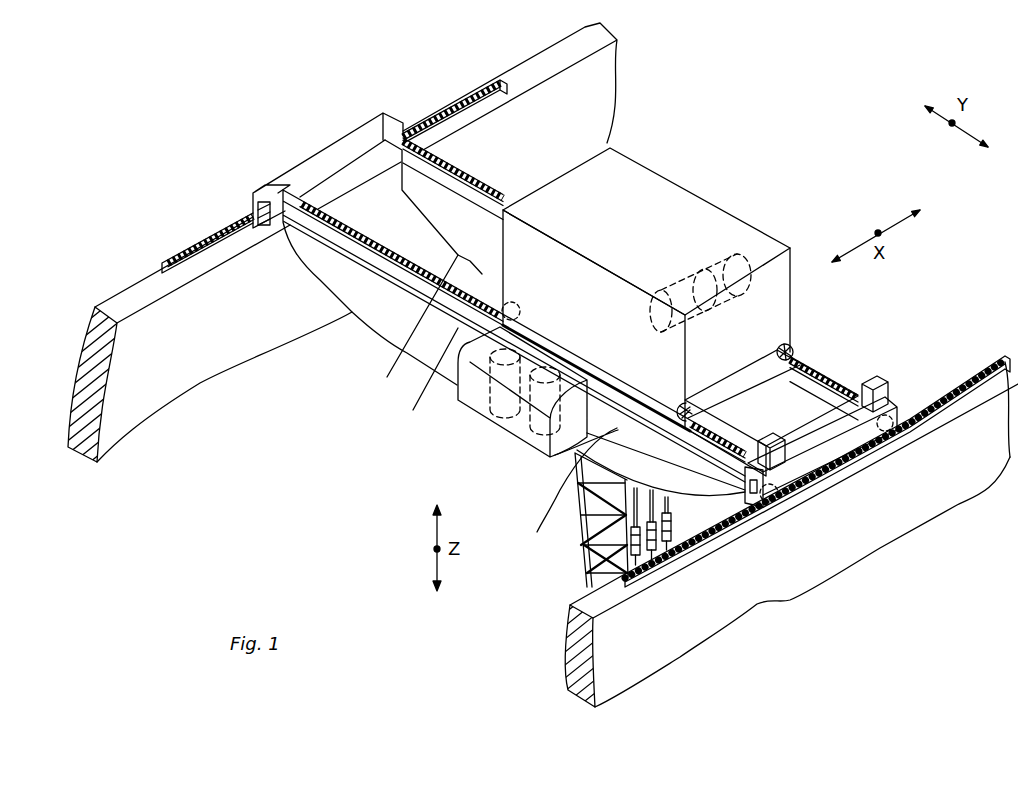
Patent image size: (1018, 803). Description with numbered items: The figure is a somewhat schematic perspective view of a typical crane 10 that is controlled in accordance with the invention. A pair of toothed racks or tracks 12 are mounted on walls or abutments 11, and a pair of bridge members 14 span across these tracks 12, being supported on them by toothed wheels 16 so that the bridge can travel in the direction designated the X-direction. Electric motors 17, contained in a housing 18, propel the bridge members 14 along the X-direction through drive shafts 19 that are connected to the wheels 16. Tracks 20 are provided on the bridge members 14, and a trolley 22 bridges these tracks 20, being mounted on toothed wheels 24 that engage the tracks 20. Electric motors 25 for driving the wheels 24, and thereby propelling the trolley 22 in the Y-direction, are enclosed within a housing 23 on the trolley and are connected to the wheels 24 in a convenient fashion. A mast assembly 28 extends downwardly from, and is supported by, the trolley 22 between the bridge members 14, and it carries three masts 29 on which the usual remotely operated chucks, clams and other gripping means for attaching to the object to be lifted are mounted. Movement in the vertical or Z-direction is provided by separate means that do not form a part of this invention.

The crane 10 is at (730, 160).
The walls or abutments 11 is at (134, 276).
The toothed racks or tracks 12 is at (478, 93).
The bridge members 14 is at (570, 310).
The toothed wheels 16 is at (258, 217).
The electric motors 17 is at (532, 422).
The housing 18 is at (512, 417).
The drive shafts 19 is at (457, 352).
The tracks 20 is at (463, 175).
The trolley 22 is at (680, 300).
The housing 23 is at (637, 160).
The toothed wheels 24 is at (693, 413).
The electric motors 25 is at (735, 255).
The mast assembly 28 is at (593, 564).
The masts 29 is at (674, 516).